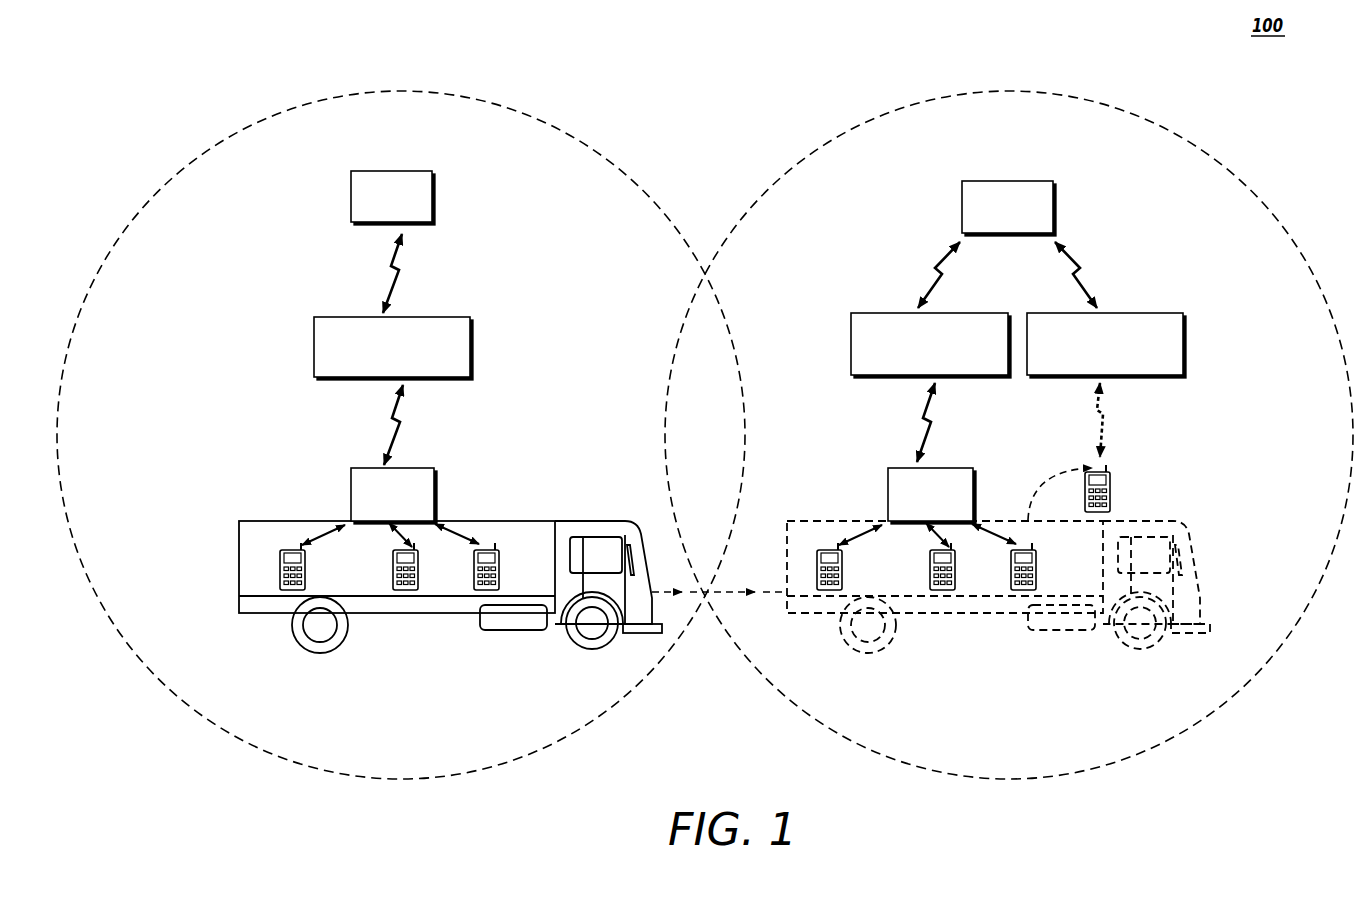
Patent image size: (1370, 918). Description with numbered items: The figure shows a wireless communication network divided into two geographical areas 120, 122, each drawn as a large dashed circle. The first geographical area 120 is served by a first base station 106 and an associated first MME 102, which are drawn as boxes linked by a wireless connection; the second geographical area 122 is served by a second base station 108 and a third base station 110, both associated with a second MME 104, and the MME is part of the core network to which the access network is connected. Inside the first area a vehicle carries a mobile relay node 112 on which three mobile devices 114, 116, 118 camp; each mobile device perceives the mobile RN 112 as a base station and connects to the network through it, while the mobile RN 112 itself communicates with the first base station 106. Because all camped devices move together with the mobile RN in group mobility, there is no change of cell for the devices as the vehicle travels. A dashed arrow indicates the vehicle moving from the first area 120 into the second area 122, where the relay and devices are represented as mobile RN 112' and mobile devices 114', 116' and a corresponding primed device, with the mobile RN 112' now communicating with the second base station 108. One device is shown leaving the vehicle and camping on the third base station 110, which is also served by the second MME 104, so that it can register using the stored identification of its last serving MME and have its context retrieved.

The first MME 102 is at (418, 171).
The second MME 104 is at (1040, 181).
The first base station 106 is at (458, 317).
The second base station 108 is at (995, 313).
The third base station 110 is at (1170, 313).
The mobile relay node 112 is at (409, 485).
The mobile relay node 112' is at (948, 484).
The mobile device 114 is at (318, 566).
The mobile device 114' is at (857, 566).
The mobile device 116 is at (379, 569).
The mobile device 116' is at (912, 568).
The mobile device 118 is at (512, 566).
The geographical area 120 is at (480, 100).
The geographical area 122 is at (1115, 107).